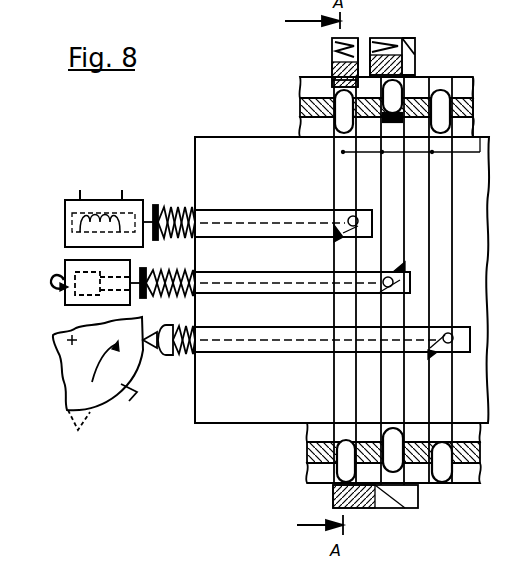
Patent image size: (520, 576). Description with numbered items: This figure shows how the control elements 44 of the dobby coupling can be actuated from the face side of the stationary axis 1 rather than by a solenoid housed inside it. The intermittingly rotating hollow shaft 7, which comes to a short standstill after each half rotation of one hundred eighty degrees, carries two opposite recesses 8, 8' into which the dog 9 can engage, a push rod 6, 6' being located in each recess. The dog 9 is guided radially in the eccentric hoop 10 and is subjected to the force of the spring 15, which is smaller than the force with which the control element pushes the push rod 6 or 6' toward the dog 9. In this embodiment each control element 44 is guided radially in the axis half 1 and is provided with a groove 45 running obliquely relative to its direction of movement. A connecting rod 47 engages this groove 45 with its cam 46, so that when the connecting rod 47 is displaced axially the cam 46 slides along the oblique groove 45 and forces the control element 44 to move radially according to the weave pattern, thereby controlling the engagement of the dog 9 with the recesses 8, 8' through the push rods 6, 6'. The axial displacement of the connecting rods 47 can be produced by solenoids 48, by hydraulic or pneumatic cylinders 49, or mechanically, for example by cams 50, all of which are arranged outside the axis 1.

The stationary axis 1 is at (240, 403).
The push rod 6 is at (368, 105).
The push rod 6' is at (371, 488).
The hollow shaft 7 is at (453, 107).
The recess 8 is at (386, 66).
The recess 8' is at (399, 479).
The dog 9 is at (332, 80).
The eccentric hoop 10 is at (402, 497).
The spring 15 is at (332, 50).
The control element 44 is at (480, 137).
The groove 45 is at (333, 227).
The cam 46 is at (337, 213).
The connecting rod 47 is at (270, 223).
The solenoid 48 is at (103, 200).
The hydraulic or pneumatic cylinder 49 is at (87, 283).
The cam 50 is at (147, 347).